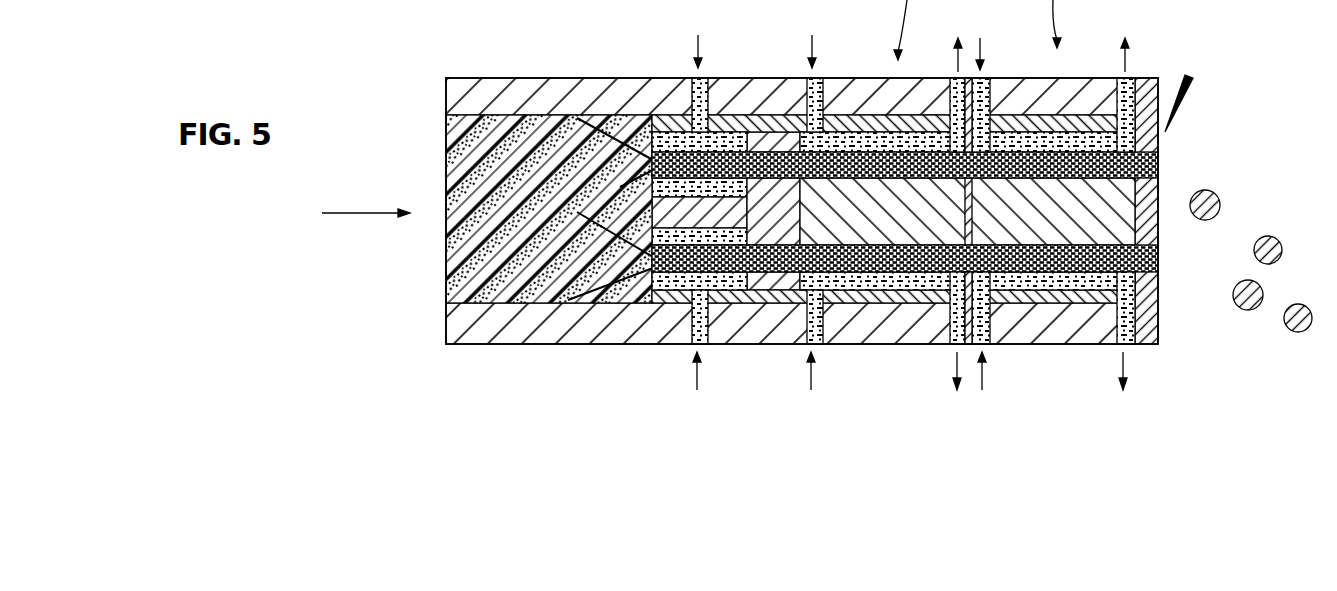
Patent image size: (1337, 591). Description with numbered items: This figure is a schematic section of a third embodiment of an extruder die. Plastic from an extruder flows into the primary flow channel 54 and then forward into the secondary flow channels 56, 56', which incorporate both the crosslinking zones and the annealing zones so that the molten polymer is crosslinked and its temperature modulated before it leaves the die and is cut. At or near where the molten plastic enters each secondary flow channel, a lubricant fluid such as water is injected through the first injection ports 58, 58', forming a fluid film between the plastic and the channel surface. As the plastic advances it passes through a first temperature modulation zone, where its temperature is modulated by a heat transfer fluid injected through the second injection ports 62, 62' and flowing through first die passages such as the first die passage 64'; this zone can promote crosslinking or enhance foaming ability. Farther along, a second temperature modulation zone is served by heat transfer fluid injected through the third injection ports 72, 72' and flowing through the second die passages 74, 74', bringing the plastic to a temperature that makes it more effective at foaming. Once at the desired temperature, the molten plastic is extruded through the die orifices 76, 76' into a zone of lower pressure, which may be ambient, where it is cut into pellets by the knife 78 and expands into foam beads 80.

The primary flow channel 54 is at (462, 273).
The secondary flow channel 56 is at (893, 91).
The secondary flow channel 56' is at (893, 332).
The first injection port 58 is at (659, 81).
The first injection port 58' is at (667, 345).
The second injection port 62 is at (840, 86).
The second injection port 62' is at (836, 345).
The first die passage 64' is at (893, 258).
The third injection port 72 is at (994, 94).
The third injection port 72' is at (992, 336).
The second die passage 74 is at (1105, 94).
The second die passage 74' is at (1096, 336).
The die orifice 76 is at (945, 156).
The die orifice 76' is at (933, 275).
The knife 78 is at (1193, 83).
The foam beads 80 is at (1222, 205).